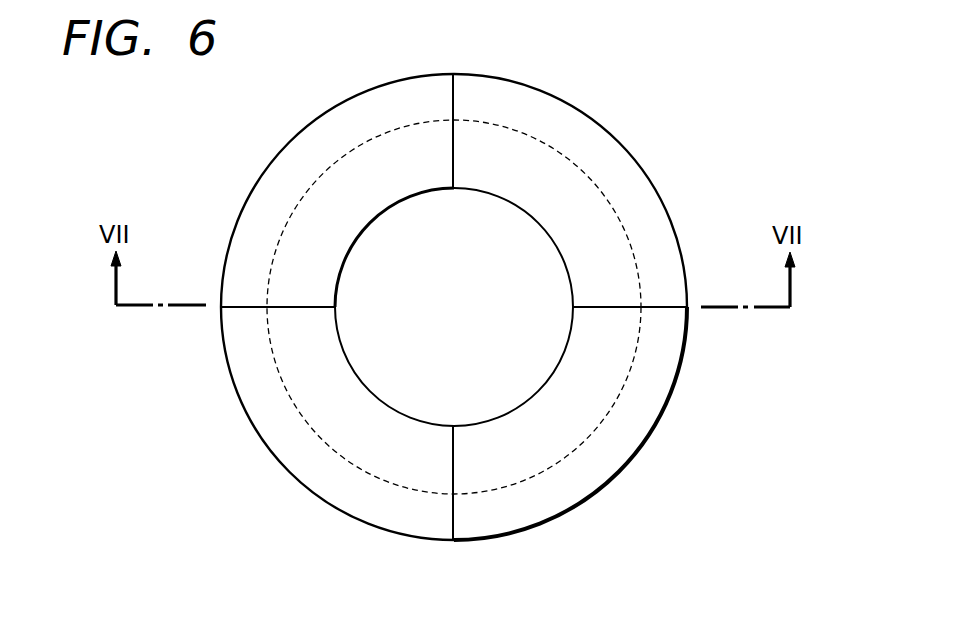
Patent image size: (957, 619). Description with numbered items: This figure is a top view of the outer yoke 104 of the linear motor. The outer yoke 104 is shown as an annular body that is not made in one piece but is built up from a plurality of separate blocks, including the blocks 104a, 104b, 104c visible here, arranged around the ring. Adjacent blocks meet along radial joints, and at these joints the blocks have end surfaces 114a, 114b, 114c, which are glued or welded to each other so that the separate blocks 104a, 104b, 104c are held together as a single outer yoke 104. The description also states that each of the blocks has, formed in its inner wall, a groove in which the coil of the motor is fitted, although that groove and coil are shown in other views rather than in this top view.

The outer yoke 104 is at (596, 122).
The separate block 104a is at (640, 190).
The separate block 104b is at (268, 192).
The separate block 104c is at (330, 483).
The end surface 114a is at (622, 310).
The end surface 114b is at (451, 144).
The end surface 114c is at (288, 308).